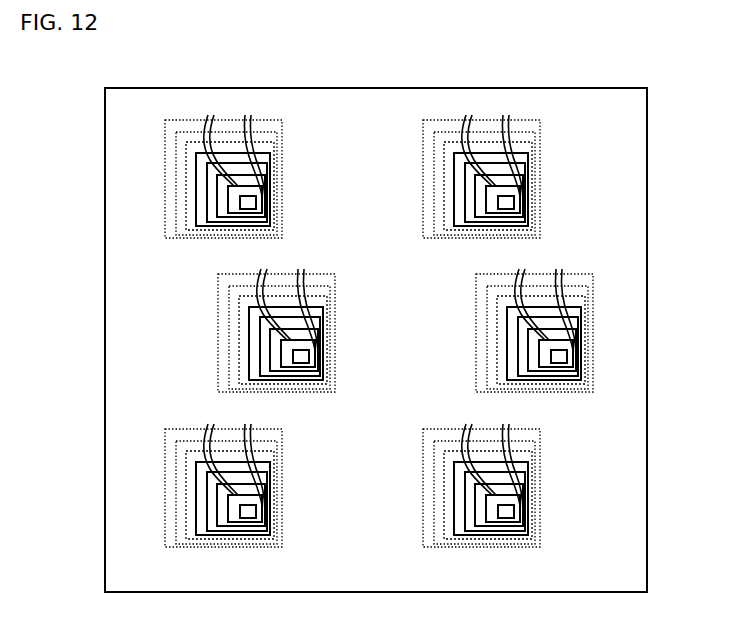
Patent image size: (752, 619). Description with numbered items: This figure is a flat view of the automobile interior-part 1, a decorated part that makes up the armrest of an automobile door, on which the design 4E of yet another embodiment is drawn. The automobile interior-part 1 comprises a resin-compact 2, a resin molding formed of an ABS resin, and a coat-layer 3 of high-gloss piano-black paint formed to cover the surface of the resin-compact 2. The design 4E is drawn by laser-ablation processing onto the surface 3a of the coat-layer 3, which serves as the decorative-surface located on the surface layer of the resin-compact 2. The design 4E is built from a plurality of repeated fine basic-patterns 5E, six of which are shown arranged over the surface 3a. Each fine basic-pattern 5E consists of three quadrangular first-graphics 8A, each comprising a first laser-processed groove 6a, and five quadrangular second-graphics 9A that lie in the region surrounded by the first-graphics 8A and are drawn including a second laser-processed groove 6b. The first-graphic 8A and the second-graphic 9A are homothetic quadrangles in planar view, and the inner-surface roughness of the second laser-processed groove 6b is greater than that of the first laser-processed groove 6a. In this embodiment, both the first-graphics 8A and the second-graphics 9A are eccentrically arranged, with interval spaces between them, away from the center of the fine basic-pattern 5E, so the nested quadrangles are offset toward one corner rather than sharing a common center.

The automobile interior-part 1 is at (668, 111).
The resin-compact 2 is at (647, 167).
The coat-layer 3 is at (645, 218).
The surface of the coat-layer 3a is at (638, 276).
The design 4E is at (153, 101).
The fine basic-pattern 5E is at (165, 172).
The first laser-processed groove 6a is at (188, 143).
The second laser-processed groove 6b is at (387, 305).
The first-graphic 8A is at (188, 200).
The second-graphic 9A is at (262, 168).